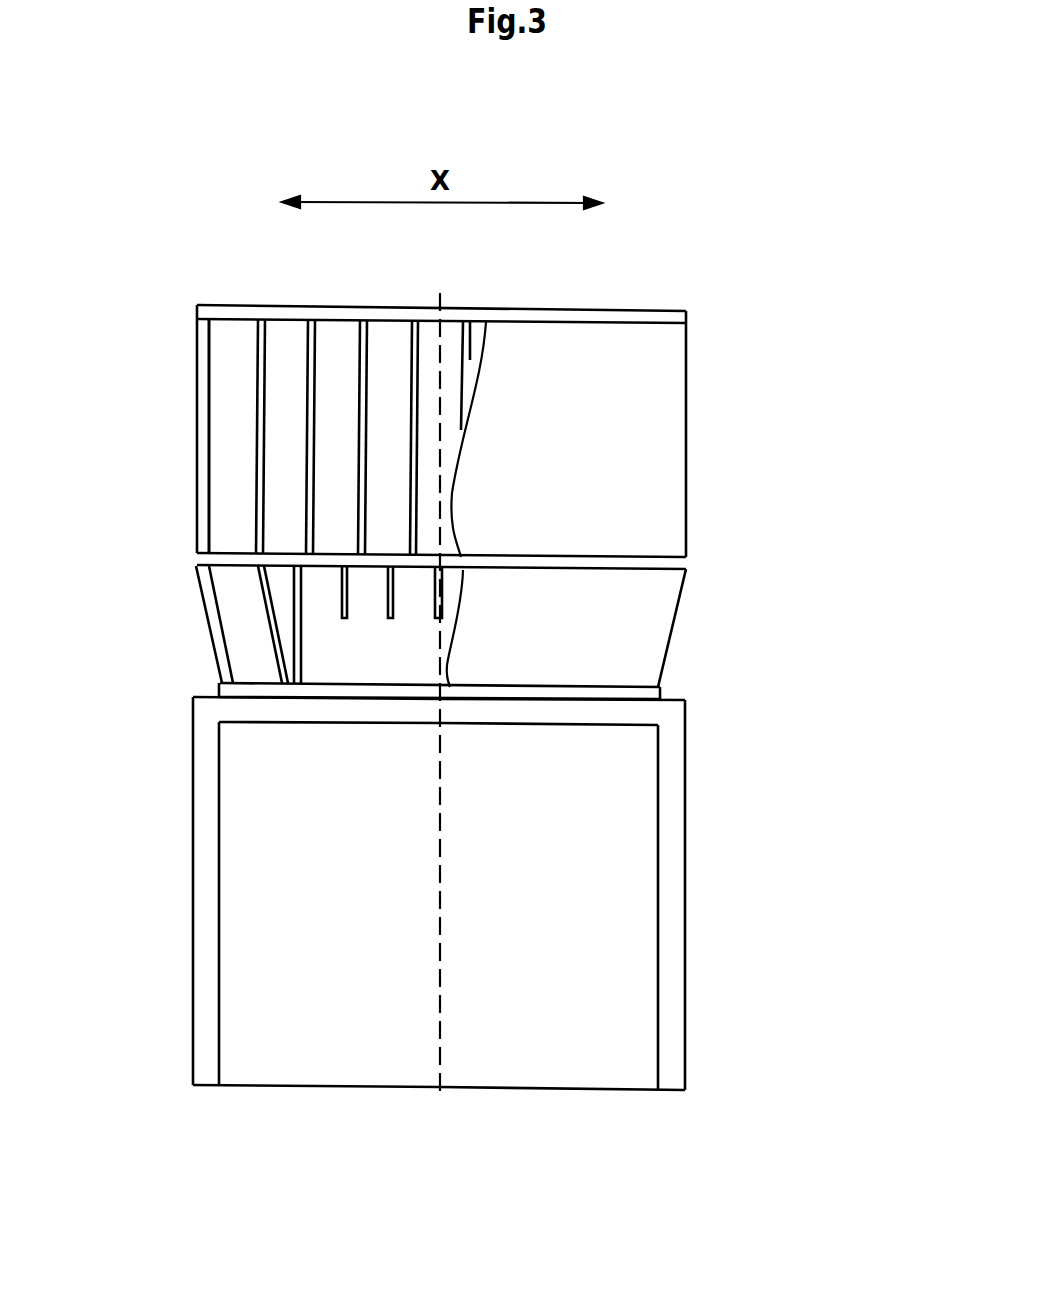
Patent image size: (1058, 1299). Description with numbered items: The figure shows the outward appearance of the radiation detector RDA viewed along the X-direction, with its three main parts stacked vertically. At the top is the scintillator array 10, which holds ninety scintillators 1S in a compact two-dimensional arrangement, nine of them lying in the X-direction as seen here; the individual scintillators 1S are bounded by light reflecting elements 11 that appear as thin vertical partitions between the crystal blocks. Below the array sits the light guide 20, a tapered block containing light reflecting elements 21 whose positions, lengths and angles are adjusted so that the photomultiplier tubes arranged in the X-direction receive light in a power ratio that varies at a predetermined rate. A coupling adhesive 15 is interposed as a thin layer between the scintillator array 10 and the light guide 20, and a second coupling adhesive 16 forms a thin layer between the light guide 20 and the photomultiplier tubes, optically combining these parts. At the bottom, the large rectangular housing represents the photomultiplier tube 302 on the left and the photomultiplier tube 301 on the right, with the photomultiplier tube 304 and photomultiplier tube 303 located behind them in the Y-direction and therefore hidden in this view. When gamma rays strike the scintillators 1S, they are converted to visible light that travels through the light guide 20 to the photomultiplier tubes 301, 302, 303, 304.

The radiation detector RDA is at (471, 643).
The scintillator array 10 is at (520, 370).
The scintillator 1S is at (234, 335).
The light reflecting element 11 is at (468, 347).
The coupling adhesive 15 is at (678, 563).
The light guide 20 is at (462, 630).
The light reflecting element 21 is at (347, 595).
The coupling adhesive 16 is at (647, 693).
The photomultiplier tube 301 is at (562, 942).
The photomultiplier tube 302 is at (347, 941).
The photomultiplier tube 303 is at (562, 942).
The photomultiplier tube 304 is at (333, 1060).